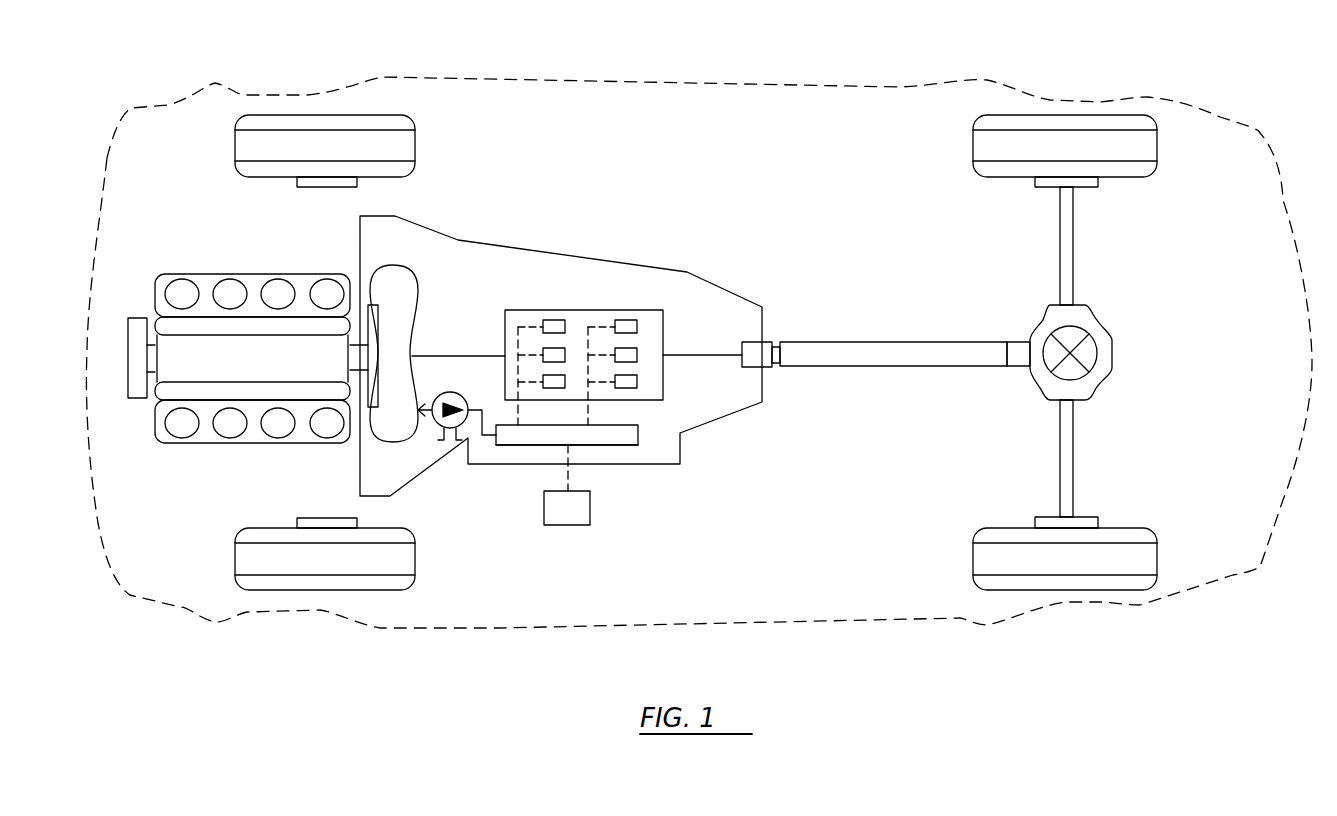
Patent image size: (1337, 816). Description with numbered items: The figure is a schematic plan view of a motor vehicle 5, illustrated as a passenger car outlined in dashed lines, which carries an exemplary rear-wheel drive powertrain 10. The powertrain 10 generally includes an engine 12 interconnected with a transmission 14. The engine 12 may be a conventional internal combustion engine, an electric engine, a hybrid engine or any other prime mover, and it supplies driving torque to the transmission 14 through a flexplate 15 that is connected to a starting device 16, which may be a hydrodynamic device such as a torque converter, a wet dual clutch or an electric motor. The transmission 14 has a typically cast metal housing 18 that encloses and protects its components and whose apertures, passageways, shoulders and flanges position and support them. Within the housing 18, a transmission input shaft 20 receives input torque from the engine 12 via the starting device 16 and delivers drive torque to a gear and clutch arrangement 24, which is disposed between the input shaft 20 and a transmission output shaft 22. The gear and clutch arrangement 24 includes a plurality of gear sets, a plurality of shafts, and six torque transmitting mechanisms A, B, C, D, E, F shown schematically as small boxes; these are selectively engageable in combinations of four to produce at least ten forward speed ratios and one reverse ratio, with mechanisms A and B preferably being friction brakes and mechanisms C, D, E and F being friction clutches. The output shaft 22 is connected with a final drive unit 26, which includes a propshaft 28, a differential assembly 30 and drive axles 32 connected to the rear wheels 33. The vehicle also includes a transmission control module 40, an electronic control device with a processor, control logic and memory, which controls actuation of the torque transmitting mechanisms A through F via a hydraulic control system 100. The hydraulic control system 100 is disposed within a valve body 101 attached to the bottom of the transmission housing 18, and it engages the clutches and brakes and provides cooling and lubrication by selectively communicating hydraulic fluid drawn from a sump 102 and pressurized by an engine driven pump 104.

The motor vehicle 5 is at (573, 78).
The powertrain 10 is at (773, 158).
The engine 12 is at (262, 372).
The transmission 14 is at (570, 258).
The flexplate 15 is at (366, 303).
The starting device 16 is at (407, 265).
The transmission housing 18 is at (737, 291).
The transmission input shaft 20 is at (425, 353).
The transmission output shaft 22 is at (717, 357).
The gear and clutch arrangement 24 is at (643, 308).
The final drive unit 26 is at (1067, 352).
The propshaft 28 is at (838, 341).
The differential assembly 30 is at (1112, 352).
The drive axles 32 is at (1060, 228).
The wheels 33 is at (1137, 178).
The transmission control module 40 is at (556, 527).
The hydraulic control system 100 is at (617, 438).
The valve body 101 is at (507, 447).
The sump 102 is at (446, 443).
The pump 104 is at (450, 392).
The torque transmitting mechanism A is at (556, 320).
The torque transmitting mechanism B is at (543, 350).
The torque transmitting mechanism C is at (543, 382).
The torque transmitting mechanism D is at (620, 320).
The torque transmitting mechanism E is at (637, 352).
The torque transmitting mechanism F is at (637, 383).